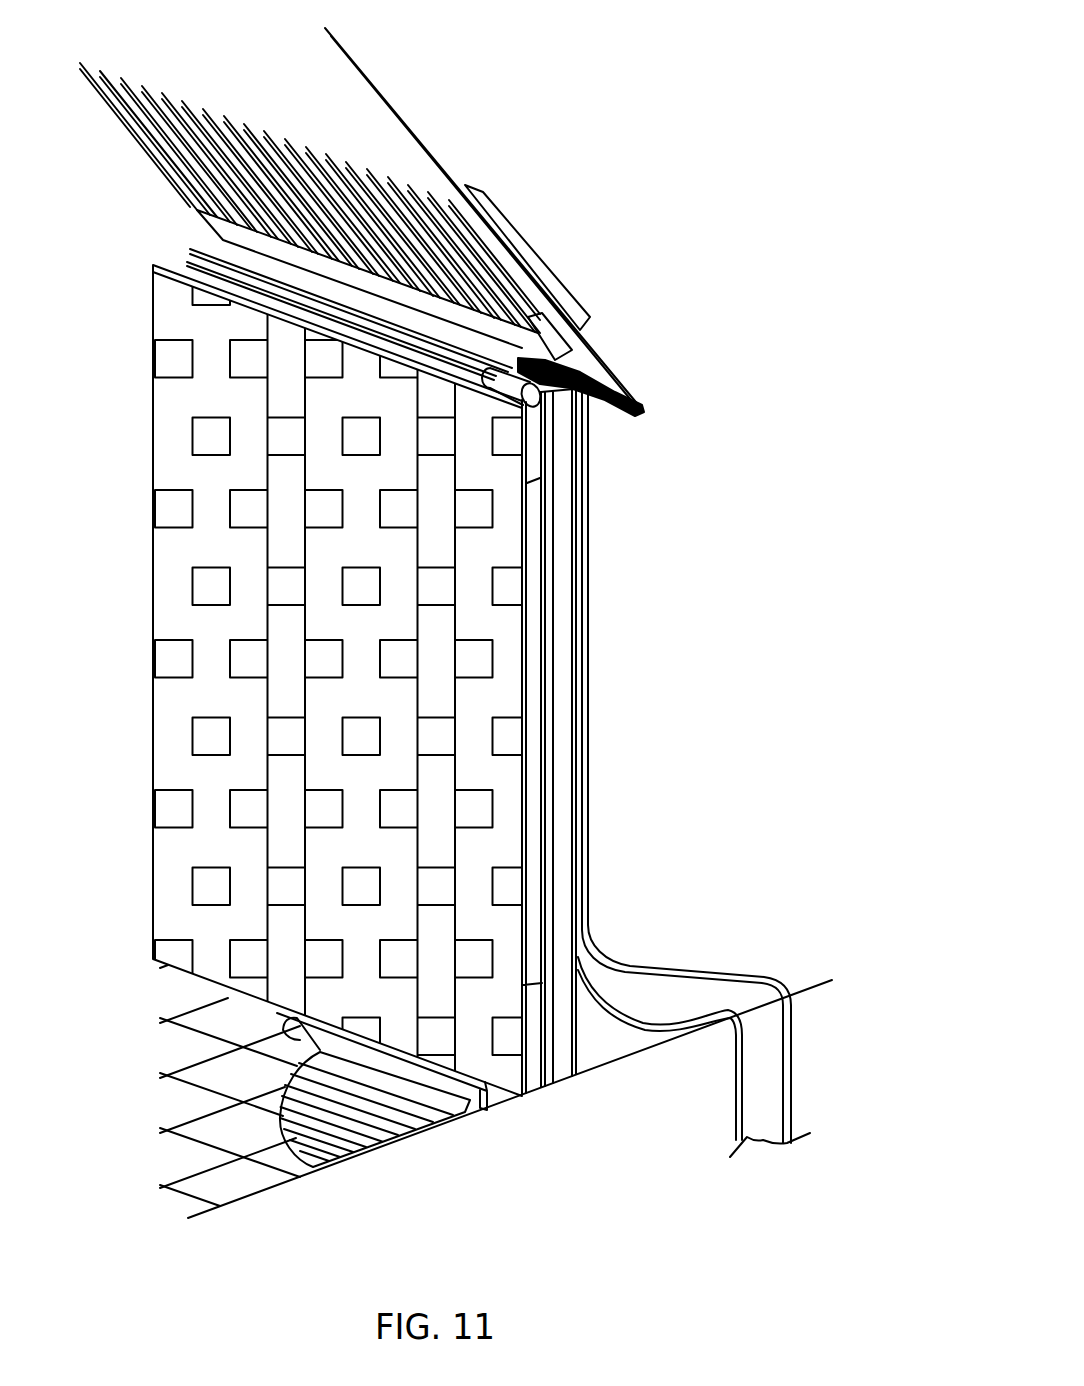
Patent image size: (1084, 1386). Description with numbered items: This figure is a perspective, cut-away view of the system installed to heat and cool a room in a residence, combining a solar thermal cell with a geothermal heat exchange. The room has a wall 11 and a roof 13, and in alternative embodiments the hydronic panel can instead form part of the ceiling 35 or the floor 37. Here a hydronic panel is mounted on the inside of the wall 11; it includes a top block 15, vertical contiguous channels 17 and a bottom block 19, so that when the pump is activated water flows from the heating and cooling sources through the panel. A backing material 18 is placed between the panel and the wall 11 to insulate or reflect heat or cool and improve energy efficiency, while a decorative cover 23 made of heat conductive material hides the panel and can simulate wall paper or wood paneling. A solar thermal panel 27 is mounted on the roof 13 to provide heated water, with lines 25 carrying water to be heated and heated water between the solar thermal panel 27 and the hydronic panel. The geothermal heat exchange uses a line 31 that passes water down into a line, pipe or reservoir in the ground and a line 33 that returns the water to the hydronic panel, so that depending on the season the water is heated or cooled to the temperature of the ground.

The wall 11 is at (565, 660).
The roof 13 is at (643, 410).
The top block 15 is at (532, 442).
The vertical contiguous channels 17 is at (533, 828).
The backing material 18 is at (553, 522).
The bottom block 19 is at (538, 1020).
The decorative cover 23 is at (480, 1053).
The lines 25 is at (573, 365).
The solar thermal panel 27 is at (532, 258).
The line 31 is at (737, 1057).
The line 33 is at (790, 1053).
The ceiling 35 is at (457, 250).
The floor 37 is at (377, 1108).